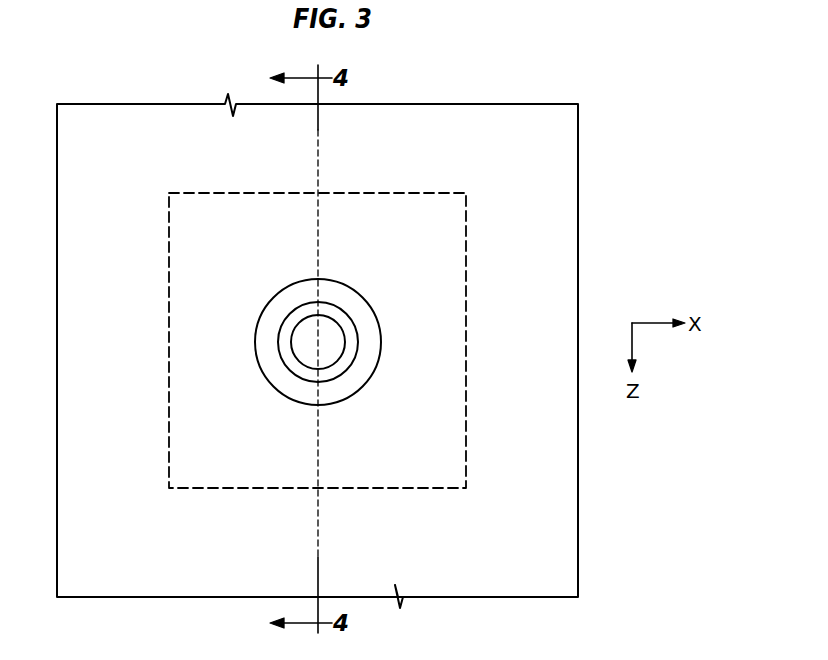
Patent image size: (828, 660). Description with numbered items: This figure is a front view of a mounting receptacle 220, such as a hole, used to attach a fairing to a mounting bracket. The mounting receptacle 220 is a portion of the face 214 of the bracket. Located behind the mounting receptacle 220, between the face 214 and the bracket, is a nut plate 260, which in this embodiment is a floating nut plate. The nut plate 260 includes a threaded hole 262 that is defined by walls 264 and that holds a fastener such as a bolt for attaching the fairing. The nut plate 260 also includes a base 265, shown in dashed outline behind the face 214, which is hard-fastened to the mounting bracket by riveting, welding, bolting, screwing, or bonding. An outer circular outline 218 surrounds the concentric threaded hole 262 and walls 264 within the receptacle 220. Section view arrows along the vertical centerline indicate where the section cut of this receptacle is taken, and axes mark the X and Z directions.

The face 214 is at (520, 104).
The base 265 is at (466, 243).
The outer circular portion 218 is at (373, 310).
The mounting receptacle 220 is at (300, 382).
The nut plate 260 is at (358, 352).
The threaded hole 262 is at (310, 340).
The walls 264 is at (340, 378).